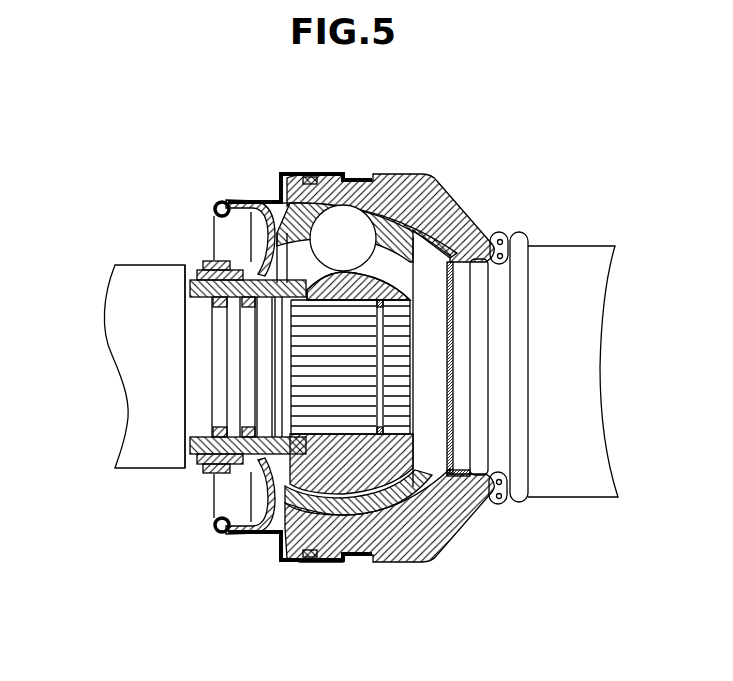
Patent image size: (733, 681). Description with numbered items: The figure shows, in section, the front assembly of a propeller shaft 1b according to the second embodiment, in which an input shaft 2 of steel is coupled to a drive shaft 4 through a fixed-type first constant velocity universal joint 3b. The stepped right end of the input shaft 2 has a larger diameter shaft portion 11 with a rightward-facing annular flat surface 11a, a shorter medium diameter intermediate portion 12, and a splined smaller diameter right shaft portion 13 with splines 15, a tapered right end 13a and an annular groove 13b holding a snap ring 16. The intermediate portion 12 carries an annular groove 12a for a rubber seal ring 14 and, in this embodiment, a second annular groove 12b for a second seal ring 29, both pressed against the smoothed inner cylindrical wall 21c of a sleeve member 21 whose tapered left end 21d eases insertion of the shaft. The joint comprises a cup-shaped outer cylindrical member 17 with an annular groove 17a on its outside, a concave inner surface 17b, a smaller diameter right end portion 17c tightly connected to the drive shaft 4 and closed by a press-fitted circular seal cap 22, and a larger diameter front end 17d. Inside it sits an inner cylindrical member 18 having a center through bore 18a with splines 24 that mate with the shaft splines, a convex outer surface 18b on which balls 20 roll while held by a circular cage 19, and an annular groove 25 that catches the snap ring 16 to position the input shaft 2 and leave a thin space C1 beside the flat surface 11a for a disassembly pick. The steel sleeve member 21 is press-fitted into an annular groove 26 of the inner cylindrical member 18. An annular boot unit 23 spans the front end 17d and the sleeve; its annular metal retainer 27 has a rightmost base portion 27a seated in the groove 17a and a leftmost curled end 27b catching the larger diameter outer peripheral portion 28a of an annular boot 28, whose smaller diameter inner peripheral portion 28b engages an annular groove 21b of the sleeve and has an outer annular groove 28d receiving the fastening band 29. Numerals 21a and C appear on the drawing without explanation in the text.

The propeller shaft 1b is at (503, 152).
The input shaft 2 is at (110, 303).
The first constant velocity universal joint 3b is at (425, 160).
The drive shaft 4 is at (578, 481).
The larger diameter shaft portion 11 is at (110, 318).
The annular flat surface 11a is at (188, 398).
The medium diameter intermediate portion 12 is at (110, 404).
The annular groove 12a is at (186, 420).
The second annular groove 12b is at (222, 533).
The smaller diameter right shaft portion 13 is at (388, 475).
The tapered right end 13a is at (395, 368).
The annular groove 13b is at (425, 347).
The seal ring 14 is at (190, 320).
The splines 15 is at (382, 445).
The snap ring 16 is at (498, 243).
The outer cylindrical member 17 is at (418, 173).
The annular groove 17a is at (358, 172).
The inner surface 17b is at (352, 548).
The smaller diameter right end portion 17c is at (468, 507).
The larger diameter front end 17d is at (294, 548).
The inner cylindrical member 18 is at (420, 520).
The center through bore 18a is at (318, 505).
The convex outer surface 18b is at (480, 215).
The circular cage 19 is at (450, 212).
The balls 20 is at (336, 172).
The sleeve member 21 is at (259, 470).
The bearing outer ring 21a is at (220, 262).
The annular groove 21b is at (205, 462).
The smoothed inner cylindrical wall 21c is at (182, 305).
The left end 21d is at (192, 466).
The circular seal cap 22 is at (455, 318).
The annular boot unit 23 is at (212, 536).
The splines 24 is at (343, 238).
The annular groove 25 is at (452, 507).
The annular groove 26 is at (283, 535).
The annular metal retainer 27 is at (289, 172).
The rightmost base portion 27a is at (369, 172).
The leftmost curled end 27b is at (226, 202).
The annular boot 28 is at (262, 202).
The larger diameter outer peripheral portion 28a is at (229, 200).
The smaller diameter inner peripheral portion 28b is at (198, 270).
The outer annular groove 28d is at (209, 472).
The fastening band 29 is at (200, 340).
The clearance C is at (328, 550).
The thin space C1 is at (185, 290).